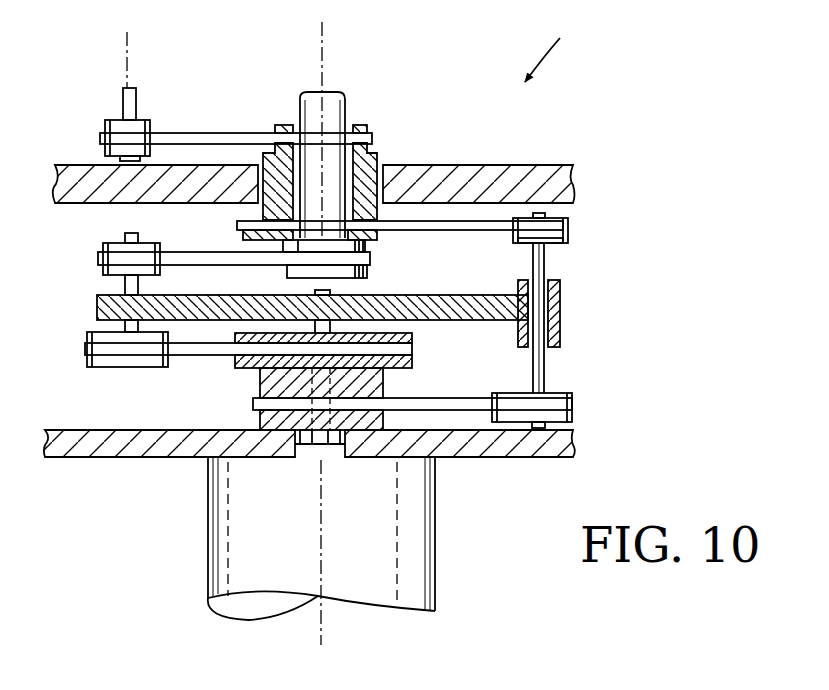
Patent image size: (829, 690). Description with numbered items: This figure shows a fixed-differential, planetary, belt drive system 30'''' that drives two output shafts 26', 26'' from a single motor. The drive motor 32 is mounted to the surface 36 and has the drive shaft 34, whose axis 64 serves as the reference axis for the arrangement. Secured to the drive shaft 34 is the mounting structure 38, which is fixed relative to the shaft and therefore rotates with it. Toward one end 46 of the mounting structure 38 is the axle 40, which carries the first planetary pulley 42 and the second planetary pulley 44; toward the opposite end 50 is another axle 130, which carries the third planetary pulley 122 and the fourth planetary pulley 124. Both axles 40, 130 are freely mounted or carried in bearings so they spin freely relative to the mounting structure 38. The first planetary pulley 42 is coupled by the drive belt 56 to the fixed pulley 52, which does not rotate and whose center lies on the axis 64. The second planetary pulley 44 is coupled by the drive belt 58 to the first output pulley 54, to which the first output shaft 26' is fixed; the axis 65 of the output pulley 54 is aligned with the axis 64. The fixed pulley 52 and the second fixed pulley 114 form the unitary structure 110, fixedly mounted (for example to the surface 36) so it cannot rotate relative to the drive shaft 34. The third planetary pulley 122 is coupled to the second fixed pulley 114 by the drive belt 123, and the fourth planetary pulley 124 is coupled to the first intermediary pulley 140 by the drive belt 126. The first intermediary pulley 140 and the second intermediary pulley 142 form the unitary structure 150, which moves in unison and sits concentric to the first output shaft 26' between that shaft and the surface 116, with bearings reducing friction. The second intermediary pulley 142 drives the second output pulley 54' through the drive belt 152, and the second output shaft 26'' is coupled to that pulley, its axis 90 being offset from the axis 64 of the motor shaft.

The bolt axis centerline 90 is at (125, 52).
The second output shaft 26'' is at (166, 77).
The second output pulley 54' is at (160, 119).
The drive belt 152 is at (213, 132).
The axis of the output pulley 65 is at (323, 45).
The first output shaft 26' is at (354, 149).
The second intermediary pulley 142 is at (370, 125).
The unitary structure 150 is at (378, 163).
The surface 116 is at (485, 165).
The fixed-differential, planetary, belt drive system 30'''' is at (571, 50).
The second planetary pulley 44 is at (112, 245).
The drive belt 58 is at (207, 252).
The first intermediary pulley 140 is at (380, 236).
The drive belt 126 is at (568, 230).
The fourth planetary pulley 124 is at (562, 245).
The axle 40 is at (122, 285).
The first output pulley 54 is at (291, 270).
The drive shaft 34 is at (333, 293).
The mounting structure 38 is at (450, 295).
The opposite end 50 is at (560, 311).
The one end 46 is at (97, 307).
The axle 130 is at (545, 367).
The fixed pulley 52 is at (412, 365).
The third planetary pulley 122 is at (563, 393).
The first planetary pulley 42 is at (120, 367).
The drive belt 56 is at (213, 355).
The unitary structure 110 is at (236, 387).
The second fixed pulley 114 is at (383, 390).
The drive belt 123 is at (572, 405).
The surface 36 is at (490, 457).
The axis of the motor shaft 64 is at (325, 508).
The drive motor 32 is at (435, 560).